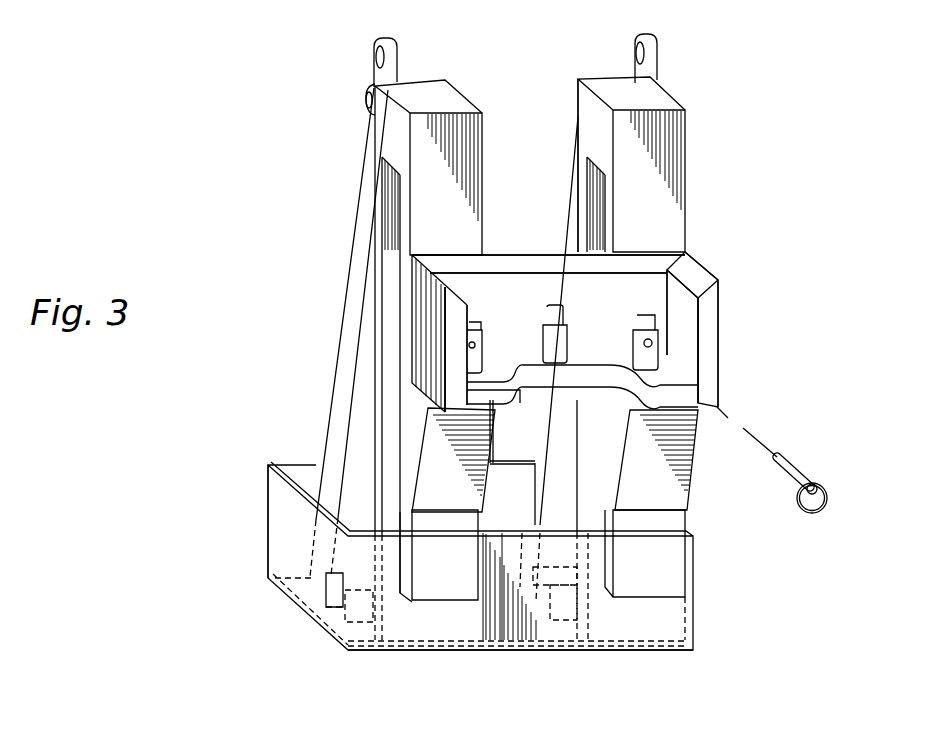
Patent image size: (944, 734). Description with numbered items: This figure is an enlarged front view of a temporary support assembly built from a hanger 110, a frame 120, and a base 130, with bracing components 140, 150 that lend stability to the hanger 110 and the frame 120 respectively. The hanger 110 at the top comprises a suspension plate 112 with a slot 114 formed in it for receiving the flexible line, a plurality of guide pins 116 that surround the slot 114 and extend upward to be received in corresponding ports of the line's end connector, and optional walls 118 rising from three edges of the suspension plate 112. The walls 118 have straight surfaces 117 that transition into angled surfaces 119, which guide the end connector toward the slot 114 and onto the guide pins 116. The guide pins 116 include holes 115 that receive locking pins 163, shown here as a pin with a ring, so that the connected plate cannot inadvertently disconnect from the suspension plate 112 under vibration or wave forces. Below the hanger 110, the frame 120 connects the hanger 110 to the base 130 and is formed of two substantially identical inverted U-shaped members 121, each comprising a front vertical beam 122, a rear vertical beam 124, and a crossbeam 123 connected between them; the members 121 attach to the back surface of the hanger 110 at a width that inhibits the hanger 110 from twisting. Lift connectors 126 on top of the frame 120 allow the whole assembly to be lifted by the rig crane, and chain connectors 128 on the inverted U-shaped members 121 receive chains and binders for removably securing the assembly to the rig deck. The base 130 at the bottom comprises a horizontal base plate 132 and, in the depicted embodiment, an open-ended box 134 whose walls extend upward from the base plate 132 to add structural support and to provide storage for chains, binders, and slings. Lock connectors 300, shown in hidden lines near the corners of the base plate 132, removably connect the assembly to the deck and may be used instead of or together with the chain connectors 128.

The hanger 110 is at (694, 256).
The suspension plate 112 is at (676, 377).
The slot 114 is at (558, 375).
The holes 115 is at (482, 342).
The guide pins 116 is at (475, 324).
The straight surfaces 117 is at (572, 290).
The walls 118 is at (637, 262).
The angled surfaces 119 is at (508, 262).
The frame 120 is at (688, 205).
The inverted U-shaped members 121 is at (484, 150).
The front vertical beam 122 is at (458, 590).
The crossbeam 123 is at (425, 82).
The rear vertical beam 124 is at (372, 137).
The lift connectors 126 is at (372, 52).
The chain connectors 128 is at (364, 99).
The base 130 is at (282, 594).
The horizontal base plate 132 is at (372, 655).
The open-ended box 134 is at (268, 520).
The bracing components 140 is at (458, 498).
The bracing components 150 is at (363, 228).
The locking pins 163 is at (790, 460).
The lock connectors 300 is at (568, 600).